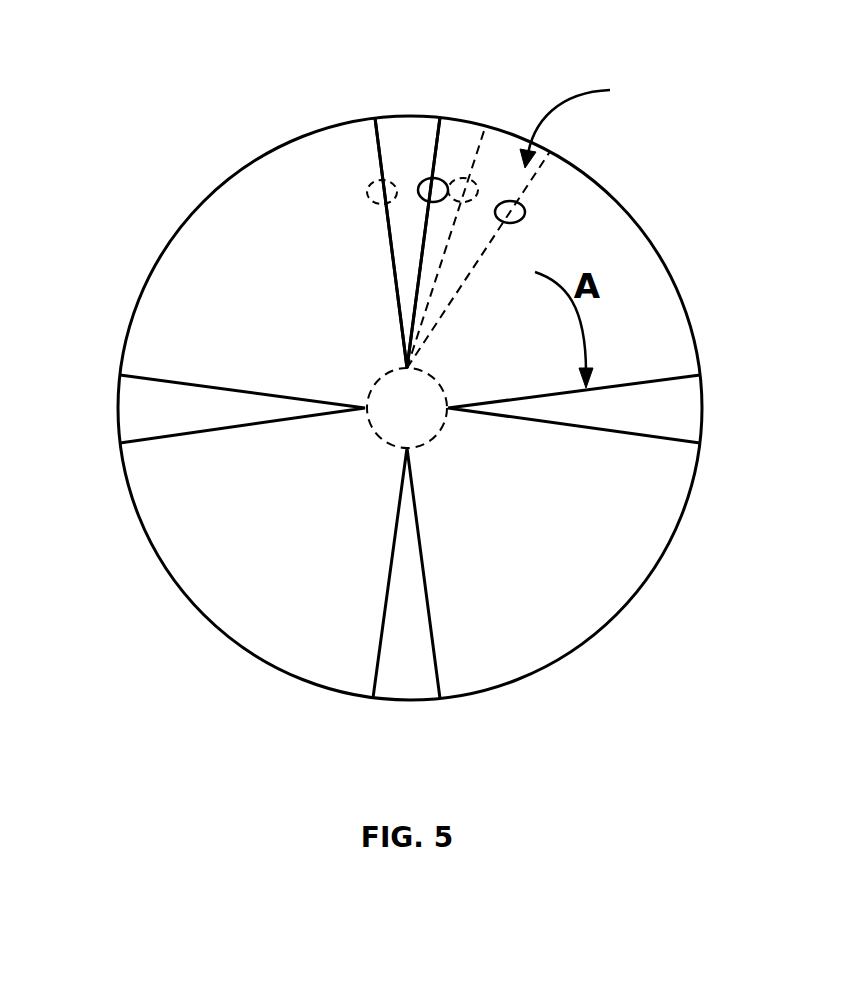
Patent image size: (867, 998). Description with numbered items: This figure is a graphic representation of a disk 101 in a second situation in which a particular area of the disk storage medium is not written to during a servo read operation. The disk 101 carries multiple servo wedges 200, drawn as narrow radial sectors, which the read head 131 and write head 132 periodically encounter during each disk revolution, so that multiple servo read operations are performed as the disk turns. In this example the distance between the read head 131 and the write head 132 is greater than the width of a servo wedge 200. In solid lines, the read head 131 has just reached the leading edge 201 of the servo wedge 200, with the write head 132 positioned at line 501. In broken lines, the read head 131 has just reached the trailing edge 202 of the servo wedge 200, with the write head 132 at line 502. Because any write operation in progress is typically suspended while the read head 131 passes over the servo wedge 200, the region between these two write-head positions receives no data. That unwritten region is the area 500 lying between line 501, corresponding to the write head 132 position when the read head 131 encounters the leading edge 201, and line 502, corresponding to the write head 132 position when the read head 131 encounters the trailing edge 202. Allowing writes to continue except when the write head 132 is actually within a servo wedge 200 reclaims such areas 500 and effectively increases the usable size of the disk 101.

The disk 101 is at (296, 140).
The servo wedge 200 is at (403, 130).
The leading edge 201 is at (455, 128).
The trailing edge 202 is at (363, 128).
The read head 131 is at (371, 184).
The write head 132 is at (523, 218).
The area 500 is at (590, 122).
The line 501 is at (530, 185).
The line 502 is at (513, 133).